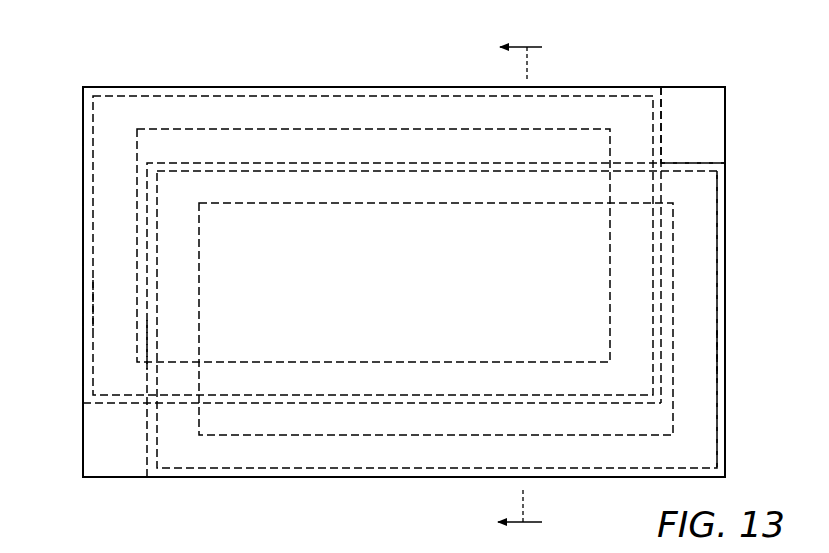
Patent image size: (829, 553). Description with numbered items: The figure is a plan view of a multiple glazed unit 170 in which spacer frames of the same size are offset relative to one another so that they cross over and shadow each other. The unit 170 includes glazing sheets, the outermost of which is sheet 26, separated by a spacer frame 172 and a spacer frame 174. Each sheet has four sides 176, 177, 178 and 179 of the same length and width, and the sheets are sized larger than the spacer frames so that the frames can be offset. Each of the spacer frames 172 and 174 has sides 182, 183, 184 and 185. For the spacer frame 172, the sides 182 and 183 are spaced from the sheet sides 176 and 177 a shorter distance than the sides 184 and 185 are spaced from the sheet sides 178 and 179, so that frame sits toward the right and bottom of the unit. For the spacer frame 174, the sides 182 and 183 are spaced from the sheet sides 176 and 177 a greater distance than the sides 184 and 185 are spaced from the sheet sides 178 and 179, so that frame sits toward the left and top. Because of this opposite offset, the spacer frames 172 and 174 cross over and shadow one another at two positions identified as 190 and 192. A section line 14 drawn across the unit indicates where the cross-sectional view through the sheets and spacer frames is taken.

The multiple glazed unit 170 is at (155, 67).
The side of sheet 179 is at (272, 87).
The side of sheet 178 is at (83, 199).
The side of sheet 176 is at (727, 210).
The side of sheet 177 is at (163, 478).
The side of spacer frame 185 is at (313, 88).
The side of spacer frame 182 is at (663, 130).
The side of spacer frame 183 is at (133, 405).
The sheet 26 is at (693, 97).
The spacer frame 172 is at (148, 233).
The side of spacer frame 184 is at (93, 303).
The cross-over position 190 is at (628, 193).
The cross-over position 192 is at (173, 382).
The spacer frame 174 is at (700, 353).
The section line 14 is at (538, 285).